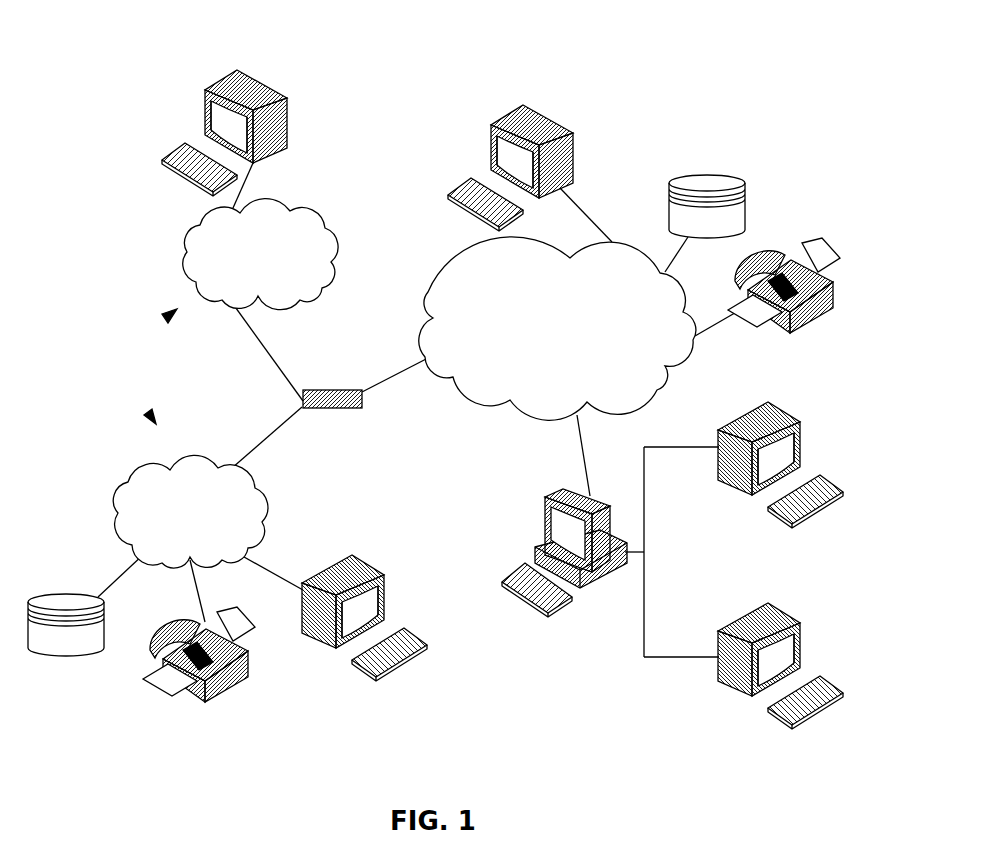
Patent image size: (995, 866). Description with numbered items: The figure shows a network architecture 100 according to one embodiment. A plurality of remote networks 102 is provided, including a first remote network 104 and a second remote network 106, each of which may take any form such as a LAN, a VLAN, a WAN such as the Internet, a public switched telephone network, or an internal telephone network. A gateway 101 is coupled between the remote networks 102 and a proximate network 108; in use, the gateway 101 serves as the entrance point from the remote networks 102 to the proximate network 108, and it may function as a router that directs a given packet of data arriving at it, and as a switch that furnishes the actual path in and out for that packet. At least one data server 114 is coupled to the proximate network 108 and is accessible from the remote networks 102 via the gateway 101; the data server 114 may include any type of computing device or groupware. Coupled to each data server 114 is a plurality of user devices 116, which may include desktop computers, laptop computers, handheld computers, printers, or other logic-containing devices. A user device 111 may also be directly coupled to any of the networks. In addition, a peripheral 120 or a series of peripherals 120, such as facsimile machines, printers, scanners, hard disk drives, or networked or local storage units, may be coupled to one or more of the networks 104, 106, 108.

The network architecture 100 is at (140, 52).
The gateway 101 is at (307, 389).
The remote networks 102 is at (164, 319).
The first remote network 104 is at (120, 492).
The second remote network 106 is at (325, 226).
The proximate network 108 is at (657, 391).
The user device 111 is at (573, 140).
The data server 114 is at (545, 510).
The user devices 116 is at (287, 105).
The peripheral 120 is at (745, 185).